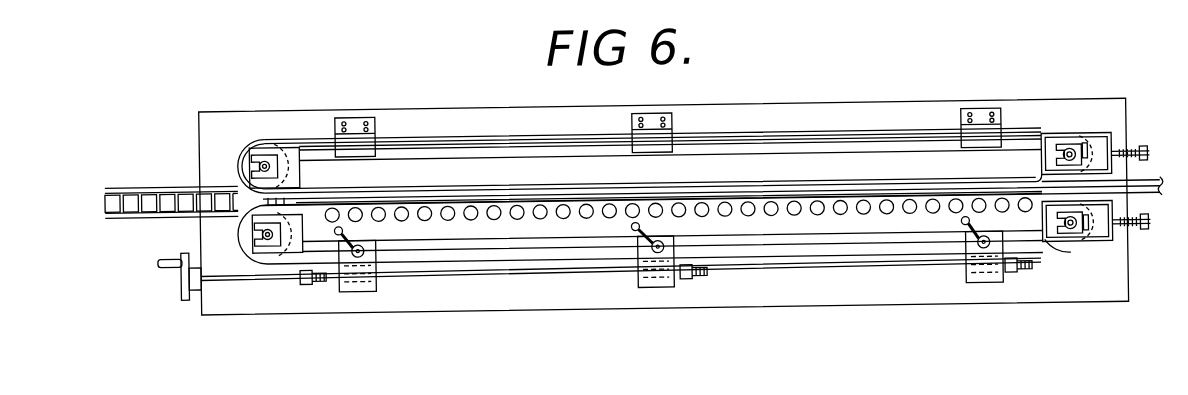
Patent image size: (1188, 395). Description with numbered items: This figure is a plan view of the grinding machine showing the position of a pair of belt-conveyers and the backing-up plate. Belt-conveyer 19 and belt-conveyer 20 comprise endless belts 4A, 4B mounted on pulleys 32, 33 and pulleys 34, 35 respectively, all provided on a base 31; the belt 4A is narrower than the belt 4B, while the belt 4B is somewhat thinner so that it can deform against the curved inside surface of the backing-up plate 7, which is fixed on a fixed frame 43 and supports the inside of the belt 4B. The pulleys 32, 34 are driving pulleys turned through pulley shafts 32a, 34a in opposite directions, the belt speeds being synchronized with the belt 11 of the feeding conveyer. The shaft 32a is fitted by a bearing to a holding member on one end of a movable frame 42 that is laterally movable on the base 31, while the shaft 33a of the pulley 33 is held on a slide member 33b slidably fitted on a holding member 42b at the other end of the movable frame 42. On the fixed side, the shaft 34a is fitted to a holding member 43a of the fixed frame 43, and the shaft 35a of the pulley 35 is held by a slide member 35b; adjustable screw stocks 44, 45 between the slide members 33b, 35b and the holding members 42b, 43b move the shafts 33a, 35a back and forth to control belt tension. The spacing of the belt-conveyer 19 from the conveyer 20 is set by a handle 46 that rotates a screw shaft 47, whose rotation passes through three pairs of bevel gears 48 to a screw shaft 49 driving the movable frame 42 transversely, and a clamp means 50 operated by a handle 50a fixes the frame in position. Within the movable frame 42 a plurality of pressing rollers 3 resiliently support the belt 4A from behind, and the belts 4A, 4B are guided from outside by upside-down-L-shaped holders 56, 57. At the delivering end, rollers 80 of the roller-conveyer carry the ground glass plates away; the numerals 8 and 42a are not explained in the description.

The pressing roller 3 is at (482, 220).
The endless belt 4A is at (597, 244).
The endless belt 4B is at (703, 142).
The backing-up plate 7 is at (805, 192).
The conveyor apparatus 8 is at (130, 221).
The belt 11 is at (1150, 190).
The belt-conveyer 19 is at (822, 267).
The belt-conveyer 20 is at (742, 141).
The base 31 is at (422, 112).
The pulley 32 is at (266, 241).
The pulley shaft 32a is at (256, 246).
The pulley 33 is at (1077, 243).
The pulley shaft 33a is at (1068, 243).
The slide member 33b is at (1112, 254).
The pulley 34 is at (255, 150).
The pulley shaft 34a is at (260, 168).
The pulley 35 is at (1070, 160).
The pulley shaft 35a is at (1063, 169).
The slide member 35b is at (1052, 146).
The movable frame 42 is at (550, 243).
The lower left belt housing 42a is at (290, 255).
The holding member 42b is at (1105, 305).
The fixed frame 43 is at (468, 171).
The holding member 43a is at (287, 161).
The holding member 43b is at (1098, 146).
The adjustable screw stock 44 is at (1143, 243).
The adjustable screw stock 45 is at (1141, 158).
The handle 46 is at (180, 291).
The screw shaft 47 is at (462, 280).
The bevel gears 48 is at (305, 287).
The screw shaft 49 is at (320, 287).
The clamp means 50 is at (362, 258).
The handle 50a is at (372, 210).
The upside-down-L-shaped holder 56 is at (367, 294).
The upside-down-L-shaped holder 57 is at (357, 120).
The roller 80 is at (126, 186).